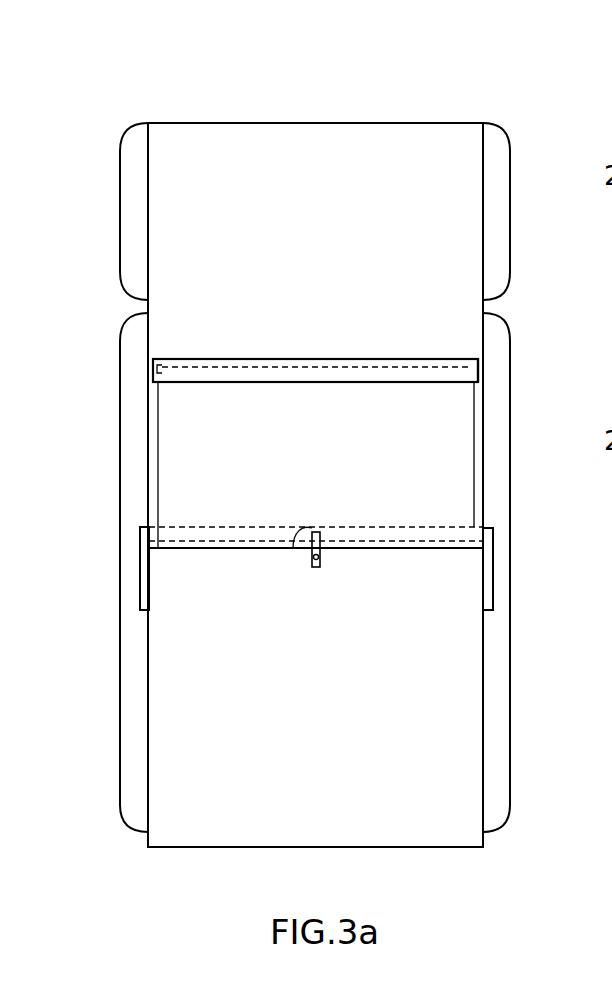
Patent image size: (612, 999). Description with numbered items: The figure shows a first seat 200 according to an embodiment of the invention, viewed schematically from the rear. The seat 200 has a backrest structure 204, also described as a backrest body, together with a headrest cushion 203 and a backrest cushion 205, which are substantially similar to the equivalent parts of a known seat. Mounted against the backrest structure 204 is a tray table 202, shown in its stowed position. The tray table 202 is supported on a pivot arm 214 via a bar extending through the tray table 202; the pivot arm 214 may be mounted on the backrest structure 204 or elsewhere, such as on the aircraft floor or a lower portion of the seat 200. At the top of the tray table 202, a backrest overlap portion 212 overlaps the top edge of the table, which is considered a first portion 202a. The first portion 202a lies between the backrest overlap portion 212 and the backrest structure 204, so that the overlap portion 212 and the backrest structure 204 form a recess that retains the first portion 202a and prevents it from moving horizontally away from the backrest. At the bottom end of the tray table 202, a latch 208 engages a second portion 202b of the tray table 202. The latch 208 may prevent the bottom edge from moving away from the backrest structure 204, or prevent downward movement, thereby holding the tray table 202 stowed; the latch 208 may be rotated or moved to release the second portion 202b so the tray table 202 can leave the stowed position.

The seat 200 is at (292, 98).
The tray table 202 is at (443, 437).
The first portion 202a is at (153, 370).
The second portion 202b is at (317, 527).
The headrest cushion 203 is at (132, 185).
The backrest structure 204 is at (460, 163).
The backrest cushion 205 is at (130, 410).
The latch 208 is at (316, 567).
The backrest overlap portion 212 is at (476, 356).
The pivot arm 214 is at (488, 568).